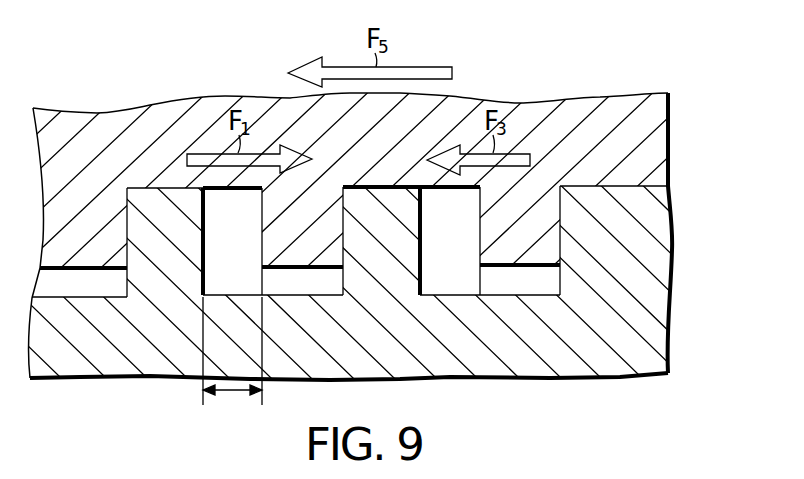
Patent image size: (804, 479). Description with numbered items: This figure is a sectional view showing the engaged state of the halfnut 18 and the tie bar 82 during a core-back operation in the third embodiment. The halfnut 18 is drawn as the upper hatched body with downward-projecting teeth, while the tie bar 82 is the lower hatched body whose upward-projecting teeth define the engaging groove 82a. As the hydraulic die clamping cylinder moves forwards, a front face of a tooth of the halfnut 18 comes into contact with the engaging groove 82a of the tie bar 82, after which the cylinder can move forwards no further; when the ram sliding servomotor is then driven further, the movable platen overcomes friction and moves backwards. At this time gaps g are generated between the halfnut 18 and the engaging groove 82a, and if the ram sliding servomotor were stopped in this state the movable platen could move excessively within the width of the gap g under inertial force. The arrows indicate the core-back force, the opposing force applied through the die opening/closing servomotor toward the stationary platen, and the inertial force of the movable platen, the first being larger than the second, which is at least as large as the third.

The halfnut 18 is at (653, 150).
The tie bar 82 is at (73, 365).
The engaging groove 82a is at (650, 288).
The gap g is at (233, 395).